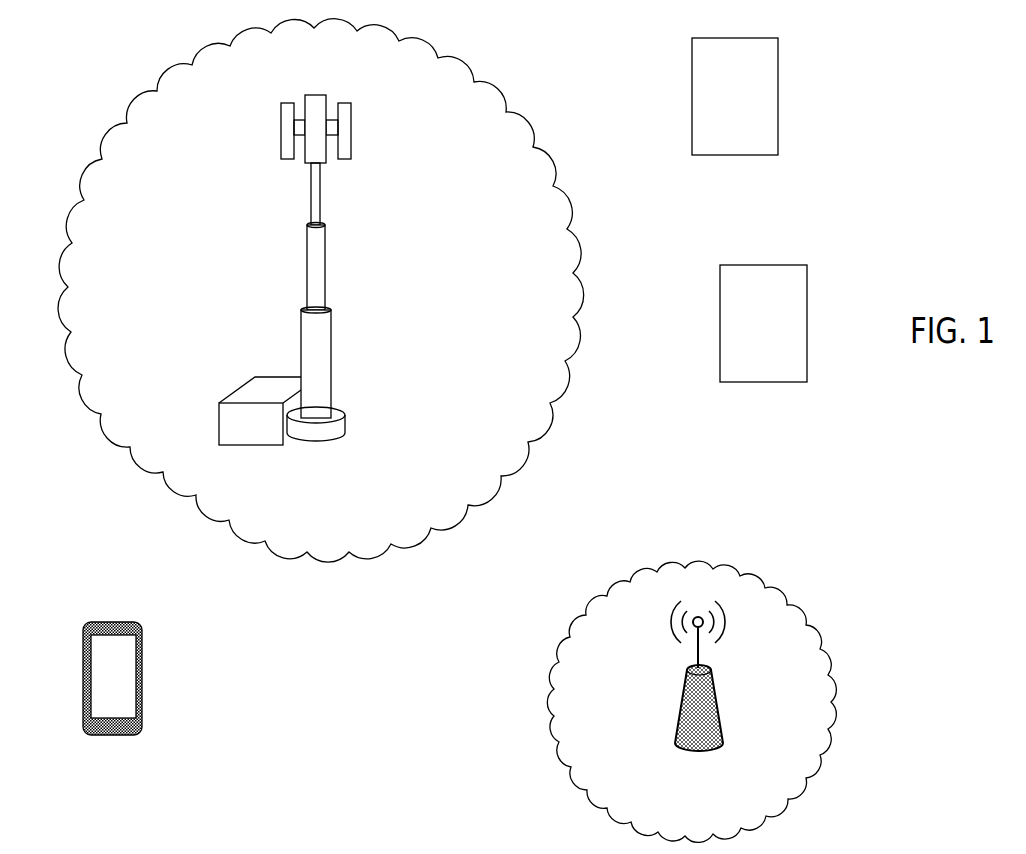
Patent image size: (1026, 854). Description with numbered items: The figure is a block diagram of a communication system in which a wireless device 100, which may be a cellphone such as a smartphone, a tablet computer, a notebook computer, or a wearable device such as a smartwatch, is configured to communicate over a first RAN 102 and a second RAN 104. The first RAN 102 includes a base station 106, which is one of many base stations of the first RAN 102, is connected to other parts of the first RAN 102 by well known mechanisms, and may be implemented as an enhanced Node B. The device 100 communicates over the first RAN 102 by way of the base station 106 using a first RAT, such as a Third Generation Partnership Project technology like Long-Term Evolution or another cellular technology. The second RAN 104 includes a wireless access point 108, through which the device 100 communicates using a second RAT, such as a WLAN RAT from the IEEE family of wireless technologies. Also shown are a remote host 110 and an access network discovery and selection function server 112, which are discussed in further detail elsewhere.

The wireless device 100 is at (148, 663).
The first RAN 102 is at (593, 300).
The second RAN 104 is at (517, 693).
The base station 106 is at (257, 242).
The wireless access point 108 is at (678, 700).
The remote host 110 is at (778, 82).
The ANDSF server 112 is at (807, 307).